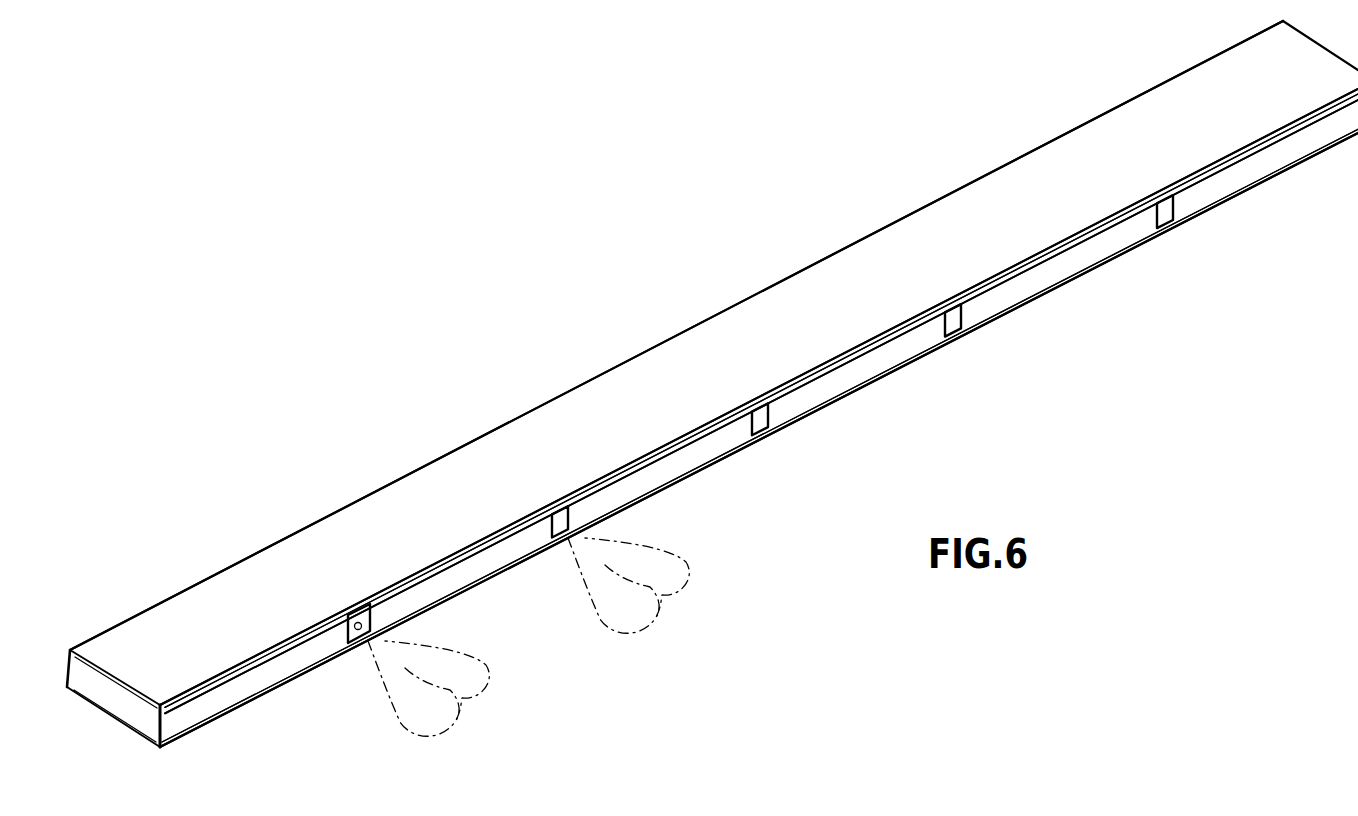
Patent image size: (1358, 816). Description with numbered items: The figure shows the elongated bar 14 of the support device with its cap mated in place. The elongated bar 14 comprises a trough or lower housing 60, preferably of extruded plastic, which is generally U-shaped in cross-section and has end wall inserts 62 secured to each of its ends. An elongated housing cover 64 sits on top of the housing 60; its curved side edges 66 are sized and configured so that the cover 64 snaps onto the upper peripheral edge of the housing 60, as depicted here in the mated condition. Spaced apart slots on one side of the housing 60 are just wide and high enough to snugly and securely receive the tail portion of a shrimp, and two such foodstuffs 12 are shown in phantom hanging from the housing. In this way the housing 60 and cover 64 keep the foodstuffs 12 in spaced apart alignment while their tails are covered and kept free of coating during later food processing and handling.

The elongated bar 14 is at (685, 319).
The housing cover 64 is at (825, 273).
The lower housing 60 is at (808, 400).
The curved side edges 66 is at (255, 550).
The end wall inserts 62 is at (117, 710).
The foodstuffs 12 is at (488, 698).